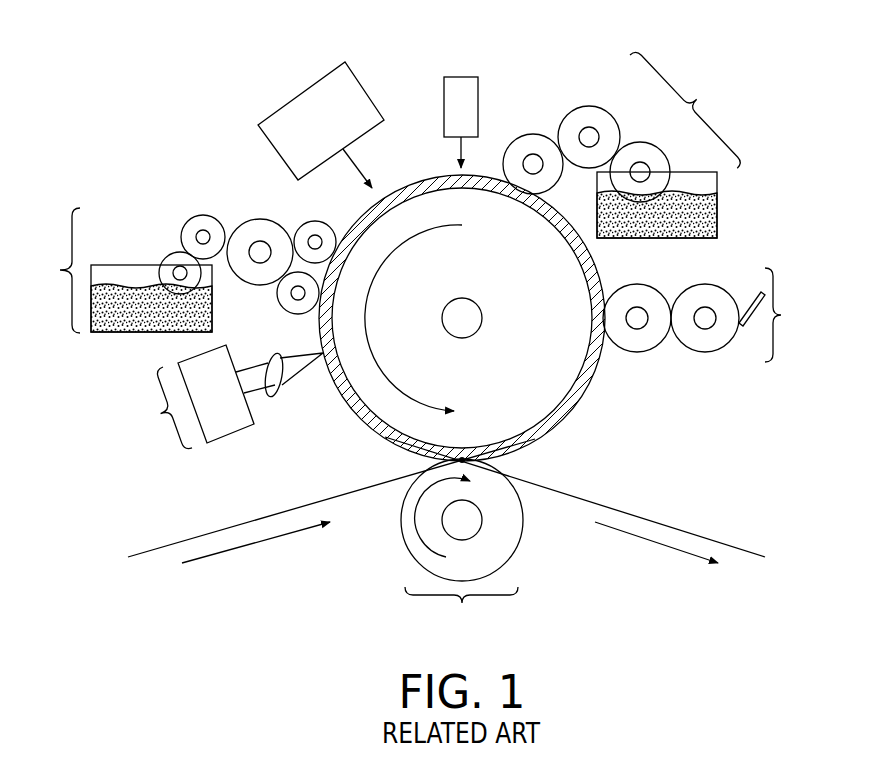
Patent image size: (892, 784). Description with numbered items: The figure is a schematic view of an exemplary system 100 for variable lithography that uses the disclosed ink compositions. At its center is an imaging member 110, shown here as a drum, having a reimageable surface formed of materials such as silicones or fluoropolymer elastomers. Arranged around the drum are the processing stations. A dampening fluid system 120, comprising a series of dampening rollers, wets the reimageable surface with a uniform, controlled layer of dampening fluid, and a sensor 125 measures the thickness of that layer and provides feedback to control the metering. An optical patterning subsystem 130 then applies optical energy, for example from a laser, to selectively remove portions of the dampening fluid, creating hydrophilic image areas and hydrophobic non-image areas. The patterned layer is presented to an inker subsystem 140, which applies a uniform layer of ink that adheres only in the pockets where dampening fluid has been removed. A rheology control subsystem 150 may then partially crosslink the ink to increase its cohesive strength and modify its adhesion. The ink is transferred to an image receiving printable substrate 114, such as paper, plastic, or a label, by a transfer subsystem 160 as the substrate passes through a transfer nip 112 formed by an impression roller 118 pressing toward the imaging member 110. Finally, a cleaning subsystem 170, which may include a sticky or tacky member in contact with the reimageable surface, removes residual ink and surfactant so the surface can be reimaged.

The system 100 is at (180, 92).
The imaging member 110 is at (581, 392).
The transfer nip 112 is at (465, 453).
The image receiving printable substrate 114 is at (238, 525).
The impression roller 118 is at (516, 549).
The dampening fluid system 120 is at (626, 140).
The sensor 125 is at (461, 77).
The optical patterning subsystem 130 is at (364, 90).
The inker subsystem 140 is at (180, 270).
The rheology control subsystem 150 is at (224, 399).
The transfer subsystem 160 is at (461, 613).
The cleaning subsystem 170 is at (713, 315).